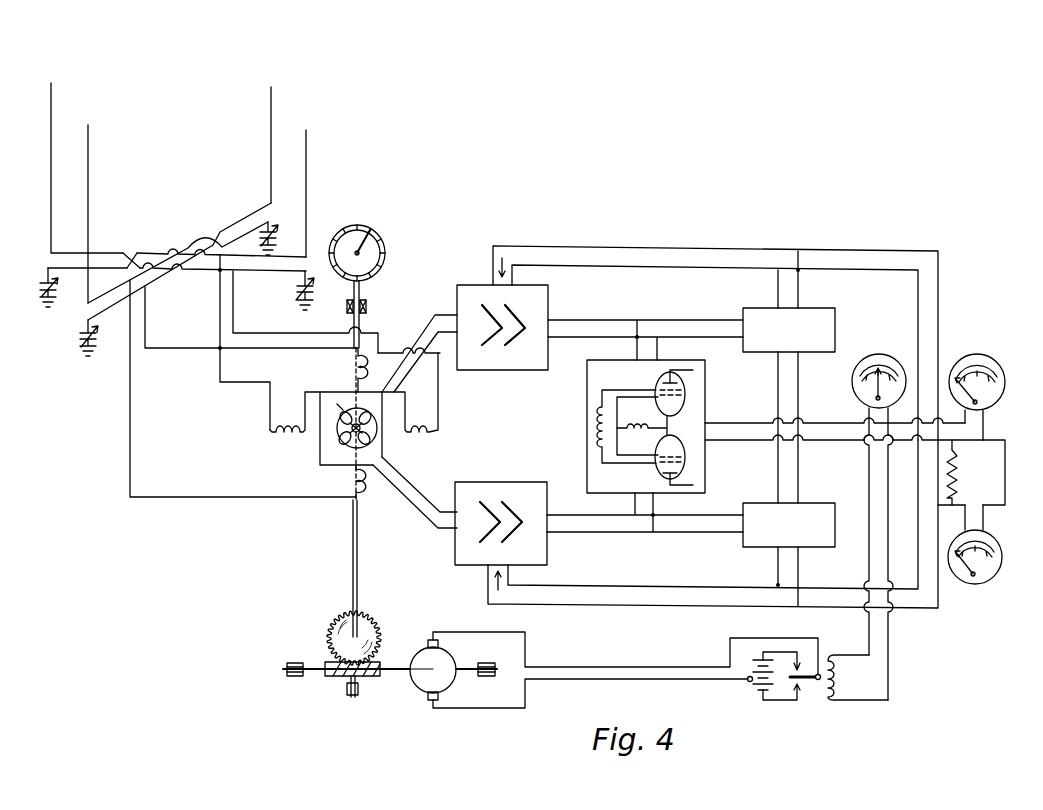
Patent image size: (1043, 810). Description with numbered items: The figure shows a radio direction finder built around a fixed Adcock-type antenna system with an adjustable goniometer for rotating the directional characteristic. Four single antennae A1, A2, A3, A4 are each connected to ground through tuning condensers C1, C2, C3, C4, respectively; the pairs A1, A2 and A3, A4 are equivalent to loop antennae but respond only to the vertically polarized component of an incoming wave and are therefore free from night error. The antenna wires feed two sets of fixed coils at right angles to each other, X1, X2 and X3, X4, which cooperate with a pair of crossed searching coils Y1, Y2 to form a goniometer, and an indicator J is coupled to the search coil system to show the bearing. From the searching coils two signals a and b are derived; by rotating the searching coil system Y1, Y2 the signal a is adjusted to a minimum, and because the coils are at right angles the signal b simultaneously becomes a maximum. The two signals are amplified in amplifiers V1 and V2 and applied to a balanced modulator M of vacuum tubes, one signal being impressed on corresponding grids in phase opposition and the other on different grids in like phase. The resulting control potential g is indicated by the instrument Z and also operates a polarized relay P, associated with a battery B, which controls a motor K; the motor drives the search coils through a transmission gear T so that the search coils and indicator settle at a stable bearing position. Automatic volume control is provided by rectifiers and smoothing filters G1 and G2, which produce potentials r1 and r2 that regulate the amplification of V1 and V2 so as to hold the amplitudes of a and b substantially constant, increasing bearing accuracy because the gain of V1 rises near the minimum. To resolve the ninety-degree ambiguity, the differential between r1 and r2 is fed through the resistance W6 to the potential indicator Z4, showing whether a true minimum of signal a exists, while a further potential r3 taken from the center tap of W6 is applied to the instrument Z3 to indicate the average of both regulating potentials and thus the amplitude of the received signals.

The antenna A1 is at (51, 166).
The antenna A2 is at (307, 187).
The antenna A3 is at (88, 186).
The antenna A4 is at (271, 142).
The tuning condenser C1 is at (38, 287).
The tuning condenser C2 is at (297, 291).
The tuning condenser C3 is at (80, 335).
The tuning condenser C4 is at (280, 229).
The indicator J is at (385, 255).
The fixed coil X1 is at (292, 422).
The fixed coil X2 is at (418, 424).
The fixed coil X3 is at (350, 364).
The fixed coil X4 is at (350, 478).
The searching coil Y1 is at (351, 421).
The searching coil Y2 is at (348, 444).
The amplifier V1 is at (543, 304).
The amplifier V2 is at (542, 499).
The rectifier and smoothing filter G1 is at (789, 405).
The rectifier and smoothing filter G2 is at (789, 525).
The modulator M is at (592, 404).
The signal a is at (654, 326).
The signal b is at (603, 526).
The control potential g is at (790, 431).
The AVC potential r1 is at (634, 256).
The AVC potential r2 is at (622, 596).
The potential r3 is at (982, 425).
The indicating instrument Z is at (873, 357).
The indicating instrument Z3 is at (981, 361).
The potential indicator Z4 is at (979, 581).
The resistance W6 is at (954, 485).
The transmission gear T is at (336, 665).
The motor K is at (427, 681).
The battery B is at (748, 683).
The polarized relay P is at (808, 684).